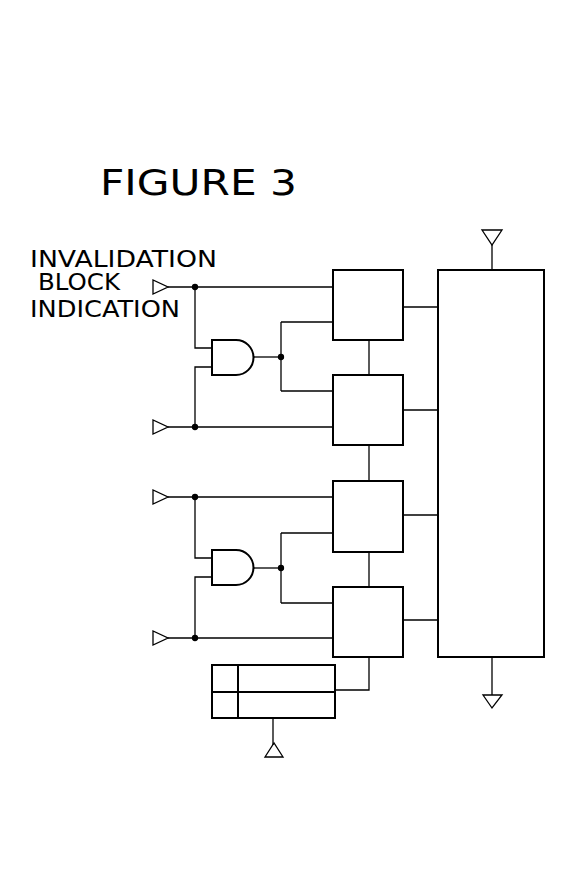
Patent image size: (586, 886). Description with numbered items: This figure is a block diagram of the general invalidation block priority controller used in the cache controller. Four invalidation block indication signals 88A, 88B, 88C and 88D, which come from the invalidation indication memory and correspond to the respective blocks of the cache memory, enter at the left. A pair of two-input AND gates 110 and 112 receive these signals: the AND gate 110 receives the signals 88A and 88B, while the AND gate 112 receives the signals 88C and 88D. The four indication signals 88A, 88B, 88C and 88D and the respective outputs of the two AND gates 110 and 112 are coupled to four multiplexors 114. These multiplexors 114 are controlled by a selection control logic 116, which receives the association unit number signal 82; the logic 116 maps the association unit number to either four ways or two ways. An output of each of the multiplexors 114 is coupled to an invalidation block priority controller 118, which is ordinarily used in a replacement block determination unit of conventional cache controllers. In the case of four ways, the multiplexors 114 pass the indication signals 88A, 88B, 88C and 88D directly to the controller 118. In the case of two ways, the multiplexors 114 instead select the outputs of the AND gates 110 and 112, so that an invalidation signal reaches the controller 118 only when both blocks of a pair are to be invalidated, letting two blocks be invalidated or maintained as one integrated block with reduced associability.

The association unit number signal 82 is at (272, 740).
The invalidation block indication signal 88A is at (178, 287).
The invalidation block indication signal 88B is at (178, 429).
The invalidation block indication signal 88C is at (180, 500).
The invalidation block indication signal 88D is at (176, 640).
The two-input AND gate 110 is at (232, 340).
The two-input AND gate 112 is at (232, 550).
The multiplexor 114 is at (375, 270).
The selection control logic 116 is at (335, 705).
The invalidation block priority controller 118 is at (517, 270).